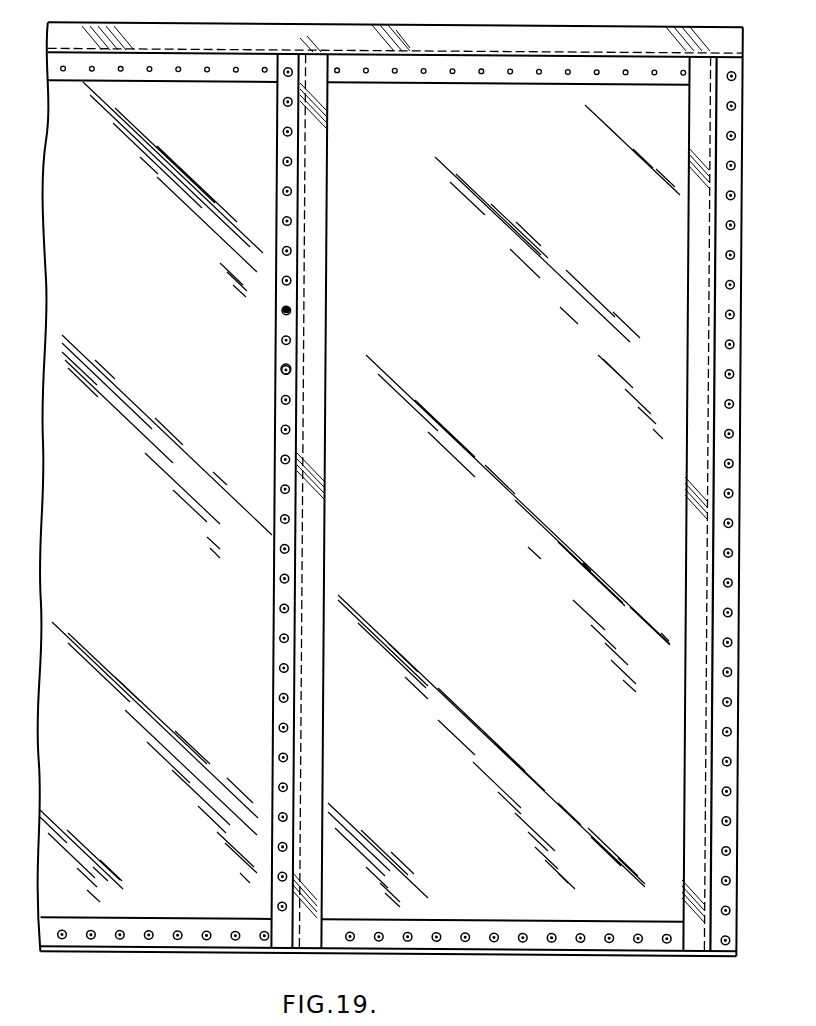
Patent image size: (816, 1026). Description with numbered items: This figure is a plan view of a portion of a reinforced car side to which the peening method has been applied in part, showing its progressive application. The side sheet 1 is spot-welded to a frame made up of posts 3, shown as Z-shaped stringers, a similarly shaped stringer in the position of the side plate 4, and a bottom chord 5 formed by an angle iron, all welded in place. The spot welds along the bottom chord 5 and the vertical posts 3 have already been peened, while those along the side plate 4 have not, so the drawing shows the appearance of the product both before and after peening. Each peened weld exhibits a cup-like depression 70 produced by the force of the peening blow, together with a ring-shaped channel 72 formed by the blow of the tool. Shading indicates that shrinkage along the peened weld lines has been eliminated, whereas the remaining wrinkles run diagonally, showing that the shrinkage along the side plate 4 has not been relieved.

The side sheet 1 is at (648, 913).
The posts 3 is at (326, 530).
The side plate 4 is at (330, 23).
The bottom chord 5 is at (192, 952).
The cup-like depression 70 is at (283, 369).
The ring-shaped channel 72 is at (284, 309).